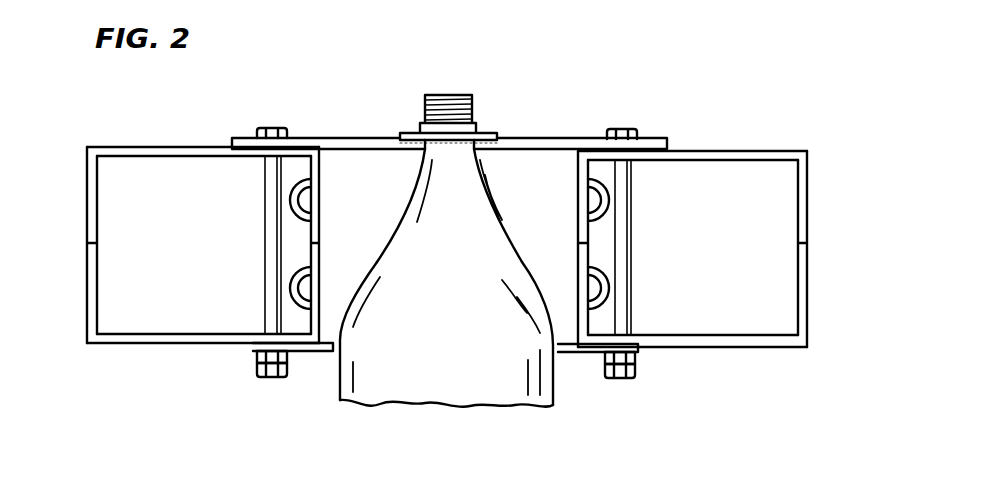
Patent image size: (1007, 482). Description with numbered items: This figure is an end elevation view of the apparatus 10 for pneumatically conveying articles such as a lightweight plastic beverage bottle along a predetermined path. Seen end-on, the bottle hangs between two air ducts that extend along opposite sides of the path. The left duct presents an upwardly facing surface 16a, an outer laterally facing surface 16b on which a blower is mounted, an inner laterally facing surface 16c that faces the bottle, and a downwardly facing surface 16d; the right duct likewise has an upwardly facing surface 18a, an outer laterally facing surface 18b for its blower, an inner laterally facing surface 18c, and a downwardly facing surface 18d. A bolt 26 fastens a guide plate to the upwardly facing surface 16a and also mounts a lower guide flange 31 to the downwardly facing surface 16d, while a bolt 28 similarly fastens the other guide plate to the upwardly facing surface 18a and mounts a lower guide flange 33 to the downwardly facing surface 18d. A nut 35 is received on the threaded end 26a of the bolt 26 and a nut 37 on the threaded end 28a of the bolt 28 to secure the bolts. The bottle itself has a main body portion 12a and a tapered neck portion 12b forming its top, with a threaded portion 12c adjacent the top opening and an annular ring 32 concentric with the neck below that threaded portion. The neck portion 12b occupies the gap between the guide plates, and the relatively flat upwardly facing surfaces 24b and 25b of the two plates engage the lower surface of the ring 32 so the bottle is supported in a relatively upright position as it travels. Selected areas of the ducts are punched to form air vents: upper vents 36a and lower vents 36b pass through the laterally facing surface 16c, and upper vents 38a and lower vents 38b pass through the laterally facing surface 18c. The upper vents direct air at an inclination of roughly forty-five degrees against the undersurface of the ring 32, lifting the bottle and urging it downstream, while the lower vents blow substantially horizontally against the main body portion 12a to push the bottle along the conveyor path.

The apparatus 10 is at (597, 81).
The main body portion 12a is at (340, 375).
The tapered neck portion 12b is at (465, 201).
The threaded portion 12c is at (428, 103).
The upwardly facing surface 16a is at (185, 146).
The laterally facing surface 16b is at (87, 189).
The laterally facing surface 16c is at (322, 165).
The downwardly facing surface 16d is at (133, 345).
The upwardly facing surface 18a is at (723, 151).
The laterally facing surface 18b is at (808, 189).
The laterally facing surface 18c is at (578, 172).
The downwardly facing surface 18d is at (782, 348).
The upwardly facing surface 24b is at (340, 138).
The upwardly facing surface 25b is at (536, 138).
The bolt 26 is at (272, 128).
The threaded end 26a is at (268, 378).
The bolt 28 is at (624, 128).
The threaded end 28a is at (625, 379).
The lower guide flange 31 is at (305, 352).
The annular ring 32 is at (490, 137).
The lower guide flange 33 is at (577, 353).
The nut 35 is at (258, 365).
The upper air vents 36a is at (311, 200).
The lower air vents 36b is at (311, 288).
The nut 37 is at (637, 363).
The upper air vents 38a is at (588, 204).
The lower air vents 38b is at (588, 289).